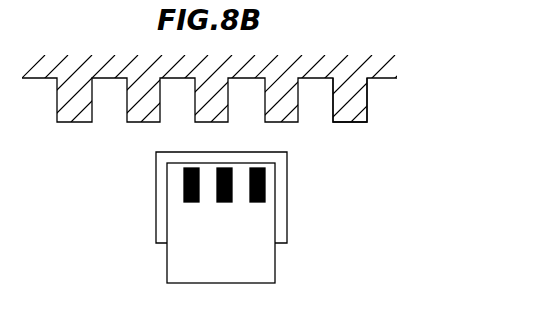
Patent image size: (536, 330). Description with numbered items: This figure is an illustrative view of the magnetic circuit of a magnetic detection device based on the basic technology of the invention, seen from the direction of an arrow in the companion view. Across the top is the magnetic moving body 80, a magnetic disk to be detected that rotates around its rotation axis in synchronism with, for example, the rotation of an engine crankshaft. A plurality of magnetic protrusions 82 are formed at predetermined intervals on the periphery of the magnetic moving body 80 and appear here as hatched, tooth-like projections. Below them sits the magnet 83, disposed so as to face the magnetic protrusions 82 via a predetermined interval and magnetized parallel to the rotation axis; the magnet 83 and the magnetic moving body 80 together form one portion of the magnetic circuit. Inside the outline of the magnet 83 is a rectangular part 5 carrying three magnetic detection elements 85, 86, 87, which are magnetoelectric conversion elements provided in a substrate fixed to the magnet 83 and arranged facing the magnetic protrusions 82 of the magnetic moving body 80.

The magnetic moving body 80 is at (393, 63).
The magnetic protrusions 82 is at (353, 100).
The magnet 83 is at (288, 163).
The sensor body 5 is at (217, 247).
The magnetic detection element 85 is at (184, 183).
The magnetic detection element 86 is at (265, 188).
The magnetic detection element 87 is at (232, 190).